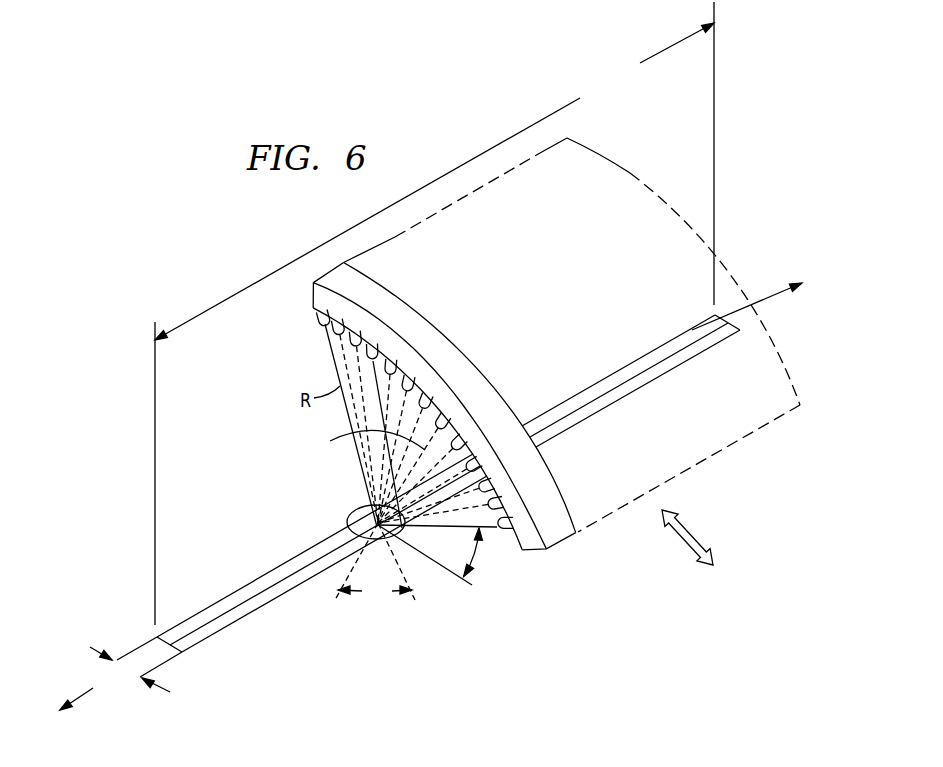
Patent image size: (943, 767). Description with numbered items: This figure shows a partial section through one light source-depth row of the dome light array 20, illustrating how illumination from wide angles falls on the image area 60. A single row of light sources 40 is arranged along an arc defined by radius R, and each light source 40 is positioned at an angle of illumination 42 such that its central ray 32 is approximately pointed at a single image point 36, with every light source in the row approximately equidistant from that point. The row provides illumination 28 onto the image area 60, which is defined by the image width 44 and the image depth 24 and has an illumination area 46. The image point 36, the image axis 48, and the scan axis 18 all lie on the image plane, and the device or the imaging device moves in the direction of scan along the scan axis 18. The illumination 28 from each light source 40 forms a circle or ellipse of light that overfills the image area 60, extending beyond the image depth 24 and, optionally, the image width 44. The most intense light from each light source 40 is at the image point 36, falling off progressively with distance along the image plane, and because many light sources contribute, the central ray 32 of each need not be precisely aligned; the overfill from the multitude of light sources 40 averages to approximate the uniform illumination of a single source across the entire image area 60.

The dome light array 20 is at (403, 301).
The light source 40 is at (318, 317).
The illumination 28 is at (358, 490).
The central ray 32 is at (366, 440).
The image point 36 is at (357, 518).
The image area 60 is at (237, 605).
The image depth 24 is at (141, 678).
The image axis 48 is at (785, 297).
The image width 44 is at (434, 313).
The scan axis 18 is at (733, 528).
The angle of illumination 42 is at (481, 557).
The illumination area 46 is at (375, 576).